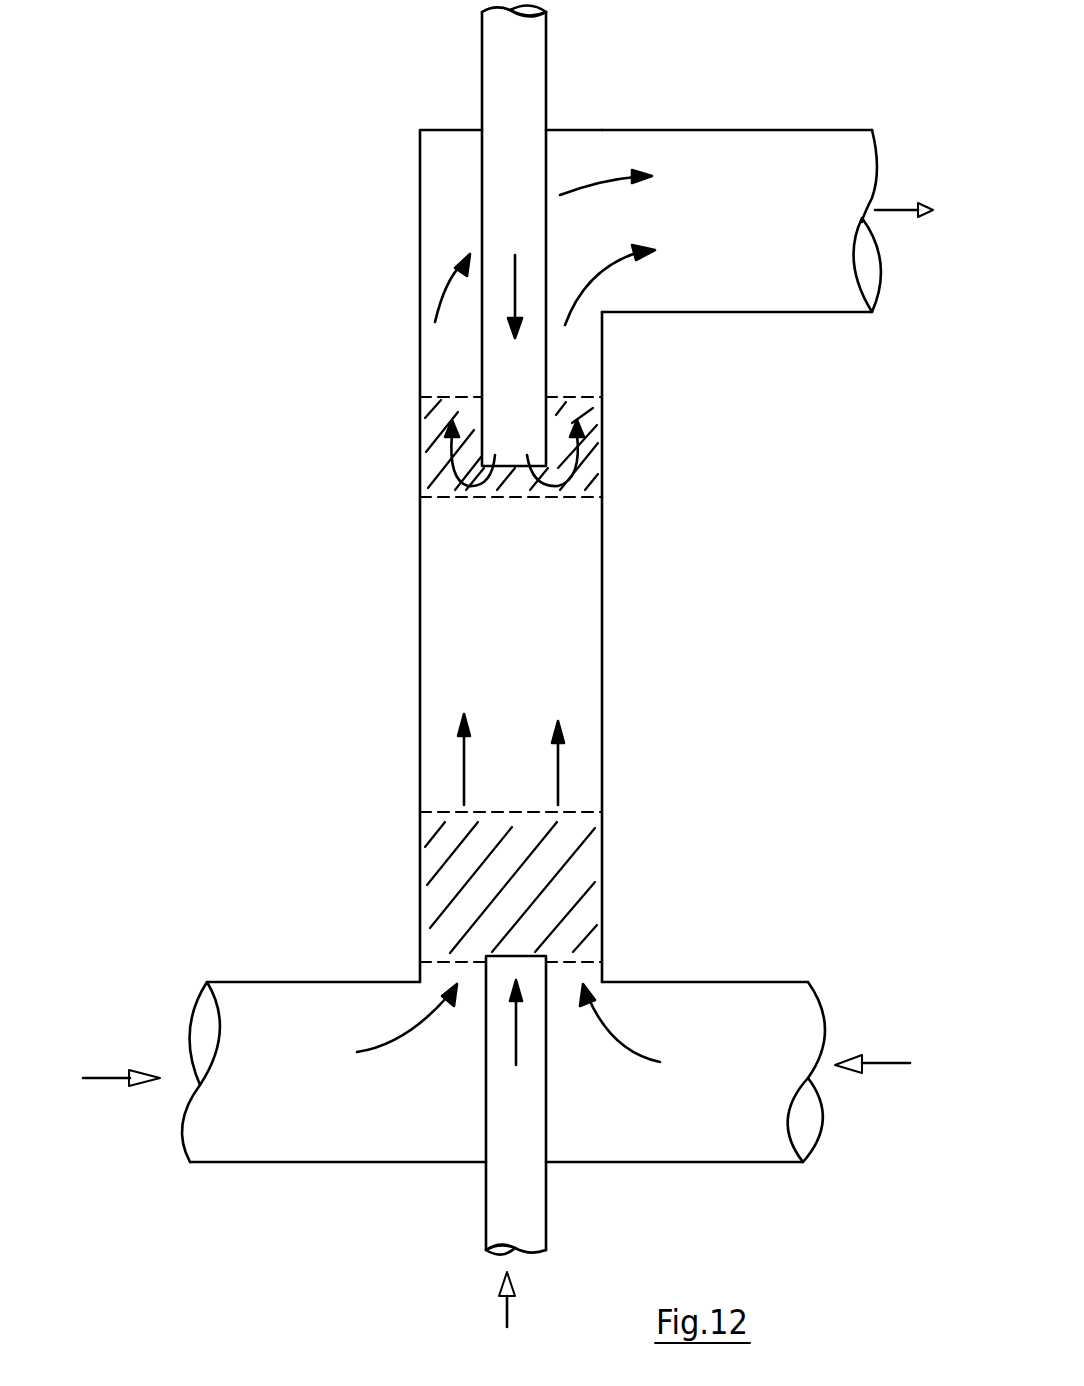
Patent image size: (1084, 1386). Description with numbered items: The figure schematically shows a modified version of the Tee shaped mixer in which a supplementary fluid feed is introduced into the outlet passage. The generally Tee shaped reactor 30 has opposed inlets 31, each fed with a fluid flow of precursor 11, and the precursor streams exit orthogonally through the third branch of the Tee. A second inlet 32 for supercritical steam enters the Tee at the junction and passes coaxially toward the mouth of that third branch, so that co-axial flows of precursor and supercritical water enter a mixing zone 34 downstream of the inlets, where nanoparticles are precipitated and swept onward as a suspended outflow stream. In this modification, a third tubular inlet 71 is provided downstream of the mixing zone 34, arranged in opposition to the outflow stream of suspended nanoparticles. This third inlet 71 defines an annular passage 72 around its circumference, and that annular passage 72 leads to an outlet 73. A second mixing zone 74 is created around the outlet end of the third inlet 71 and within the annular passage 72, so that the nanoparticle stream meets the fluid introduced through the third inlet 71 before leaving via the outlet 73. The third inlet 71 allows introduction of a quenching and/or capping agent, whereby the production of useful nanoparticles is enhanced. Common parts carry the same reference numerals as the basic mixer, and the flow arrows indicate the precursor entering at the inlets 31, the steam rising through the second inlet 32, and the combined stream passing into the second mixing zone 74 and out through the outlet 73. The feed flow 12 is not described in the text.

The third tubular inlet 71 is at (500, 98).
The annular passage 72 is at (443, 362).
The outlet 73 is at (817, 170).
The second mixing zone 74 is at (597, 441).
The Tee shaped reactor 30 is at (706, 822).
The mixing zone 34 is at (600, 906).
The inlets 31 is at (225, 986).
The second inlet 32 is at (484, 1218).
The precursor 11 is at (104, 1078).
The feed flow 12 is at (505, 1318).